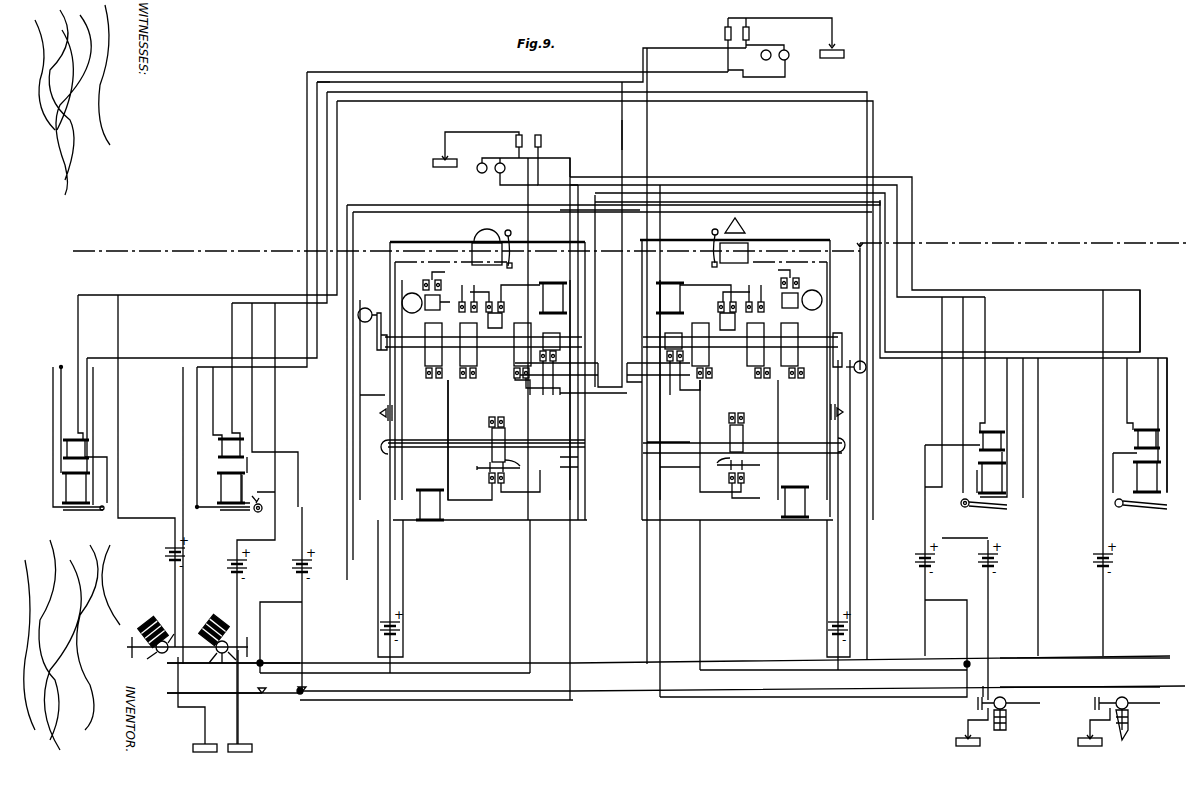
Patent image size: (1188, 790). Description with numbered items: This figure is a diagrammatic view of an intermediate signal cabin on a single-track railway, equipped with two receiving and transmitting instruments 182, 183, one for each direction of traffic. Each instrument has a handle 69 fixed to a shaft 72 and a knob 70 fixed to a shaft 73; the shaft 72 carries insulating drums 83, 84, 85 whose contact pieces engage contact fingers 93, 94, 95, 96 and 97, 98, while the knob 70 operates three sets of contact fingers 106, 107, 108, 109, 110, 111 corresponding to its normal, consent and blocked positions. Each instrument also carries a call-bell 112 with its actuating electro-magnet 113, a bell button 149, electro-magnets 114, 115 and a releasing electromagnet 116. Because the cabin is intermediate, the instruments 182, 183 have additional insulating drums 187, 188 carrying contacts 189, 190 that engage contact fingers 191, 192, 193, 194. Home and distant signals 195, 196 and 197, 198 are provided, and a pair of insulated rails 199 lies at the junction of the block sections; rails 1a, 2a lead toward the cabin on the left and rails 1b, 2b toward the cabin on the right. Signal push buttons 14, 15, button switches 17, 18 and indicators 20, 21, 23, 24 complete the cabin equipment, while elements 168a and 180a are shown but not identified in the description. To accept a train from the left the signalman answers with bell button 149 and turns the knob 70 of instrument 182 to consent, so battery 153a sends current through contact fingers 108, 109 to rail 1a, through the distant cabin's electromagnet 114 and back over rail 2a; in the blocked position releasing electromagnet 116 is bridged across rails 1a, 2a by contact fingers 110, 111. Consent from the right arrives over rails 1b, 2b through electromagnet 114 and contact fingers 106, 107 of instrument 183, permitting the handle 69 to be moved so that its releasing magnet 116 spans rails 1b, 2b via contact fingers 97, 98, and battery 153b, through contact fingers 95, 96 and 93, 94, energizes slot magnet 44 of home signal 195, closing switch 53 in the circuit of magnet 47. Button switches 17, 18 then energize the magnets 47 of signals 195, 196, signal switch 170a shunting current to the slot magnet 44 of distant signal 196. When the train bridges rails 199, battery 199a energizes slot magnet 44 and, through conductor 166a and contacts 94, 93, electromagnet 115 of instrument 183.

The rail 1a is at (176, 695).
The rail 2a is at (163, 663).
The rail 1b is at (1160, 688).
The rail 2b is at (1142, 656).
The signal push button 14 is at (477, 170).
The signal push button 15 is at (495, 171).
The button switch 17 is at (787, 62).
The button switch 18 is at (766, 60).
The indicator 20 is at (515, 143).
The indicator 21 is at (545, 141).
The indicator 23 is at (749, 27).
The indicator 24 is at (724, 30).
The slot magnet 44 is at (611, 482).
The magnet 47 is at (89, 448).
The switch 53 is at (73, 514).
The handle 69 is at (611, 331).
The knob 70 is at (610, 447).
The shaft 72 is at (832, 332).
The shaft 73 is at (414, 444).
The insulating drum 83 is at (611, 344).
The insulating drum 84 is at (611, 325).
The insulating drum 85 is at (611, 344).
The contact finger 93 is at (420, 372).
The contact finger 94 is at (440, 370).
The contact finger 95 is at (474, 374).
The contact finger 96 is at (476, 370).
The contact finger 97 is at (515, 382).
The contact finger 98 is at (612, 389).
The contact finger 106 is at (490, 422).
The contact finger 107 is at (503, 423).
The contact finger 108 is at (485, 465).
The contact finger 109 is at (520, 468).
The contact finger 110 is at (488, 483).
The contact finger 111 is at (502, 484).
The call-bell 112 is at (740, 227).
The actuating electro-magnet 113 is at (746, 262).
The electro-magnet 114 is at (683, 302).
The electro-magnet 115 is at (412, 295).
The releasing electromagnet 116 is at (433, 514).
The bell button 149 is at (380, 414).
The battery 153a is at (403, 629).
The battery 153b is at (856, 629).
The conductor 166a is at (361, 103).
The conductor 168a is at (622, 138).
The signal switch 170a is at (222, 657).
The switch 180a is at (267, 508).
The receiving and transmitting instrument 182 is at (534, 242).
The receiving and transmitting instrument 183 is at (696, 243).
The additional insulating drum 187 is at (555, 335).
The additional insulating drum 188 is at (667, 335).
The contact 189 is at (560, 347).
The contact 190 is at (662, 353).
The contact finger 191 is at (556, 384).
The contact finger 192 is at (573, 384).
The contact finger 193 is at (658, 383).
The contact finger 194 is at (663, 390).
The home signal 195 is at (216, 622).
The distant signal 196 is at (144, 622).
The home signal 197 is at (1010, 730).
The distant signal 198 is at (1119, 722).
The insulated rails 199 is at (746, 692).
The battery 199a is at (309, 566).